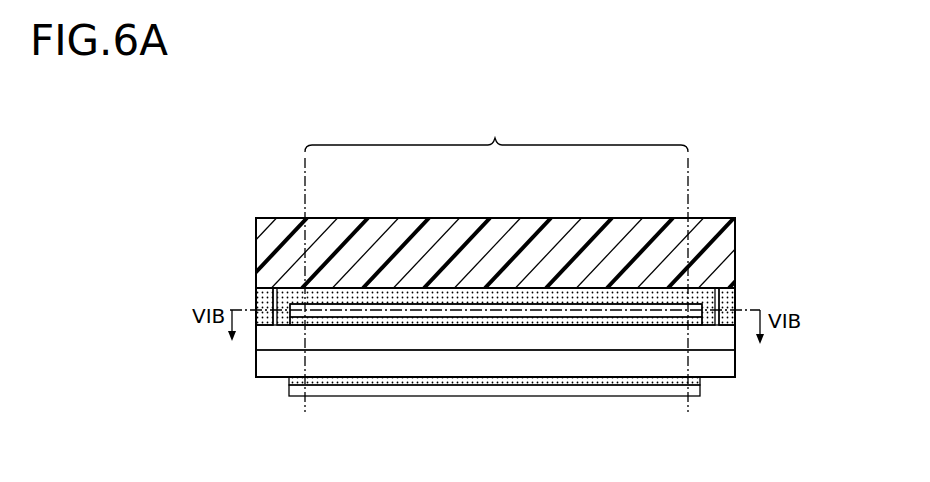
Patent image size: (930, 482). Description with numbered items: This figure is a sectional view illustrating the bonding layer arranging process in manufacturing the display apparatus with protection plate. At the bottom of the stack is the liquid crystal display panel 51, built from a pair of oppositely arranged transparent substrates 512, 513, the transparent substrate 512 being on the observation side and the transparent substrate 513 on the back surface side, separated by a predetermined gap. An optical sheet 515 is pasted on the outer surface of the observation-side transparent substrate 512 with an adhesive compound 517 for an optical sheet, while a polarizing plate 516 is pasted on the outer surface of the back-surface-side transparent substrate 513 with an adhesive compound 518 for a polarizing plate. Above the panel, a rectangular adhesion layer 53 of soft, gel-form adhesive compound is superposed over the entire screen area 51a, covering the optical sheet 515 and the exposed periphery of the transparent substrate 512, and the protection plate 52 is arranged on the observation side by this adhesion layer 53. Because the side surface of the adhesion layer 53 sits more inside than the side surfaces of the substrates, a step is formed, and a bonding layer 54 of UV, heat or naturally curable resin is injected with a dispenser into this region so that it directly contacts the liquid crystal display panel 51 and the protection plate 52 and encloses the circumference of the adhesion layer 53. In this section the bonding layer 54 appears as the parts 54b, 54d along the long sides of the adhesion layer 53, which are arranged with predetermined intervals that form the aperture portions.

The liquid crystal display panel 51 is at (716, 402).
The screen area 51a is at (496, 260).
The protection plate 52 is at (626, 232).
The adhesion layer 53 is at (518, 294).
The bonding layer 54 is at (495, 306).
The part of bonding layer 54b is at (255, 297).
The part of bonding layer 54d is at (736, 298).
The transparent substrate 512 is at (263, 342).
The transparent substrate 513 is at (267, 368).
The optical sheet 515 is at (413, 310).
The polarizing plate 516 is at (458, 390).
The adhesive compound for optical sheet 517 is at (559, 319).
The adhesive compound for polarizing plate 518 is at (402, 387).